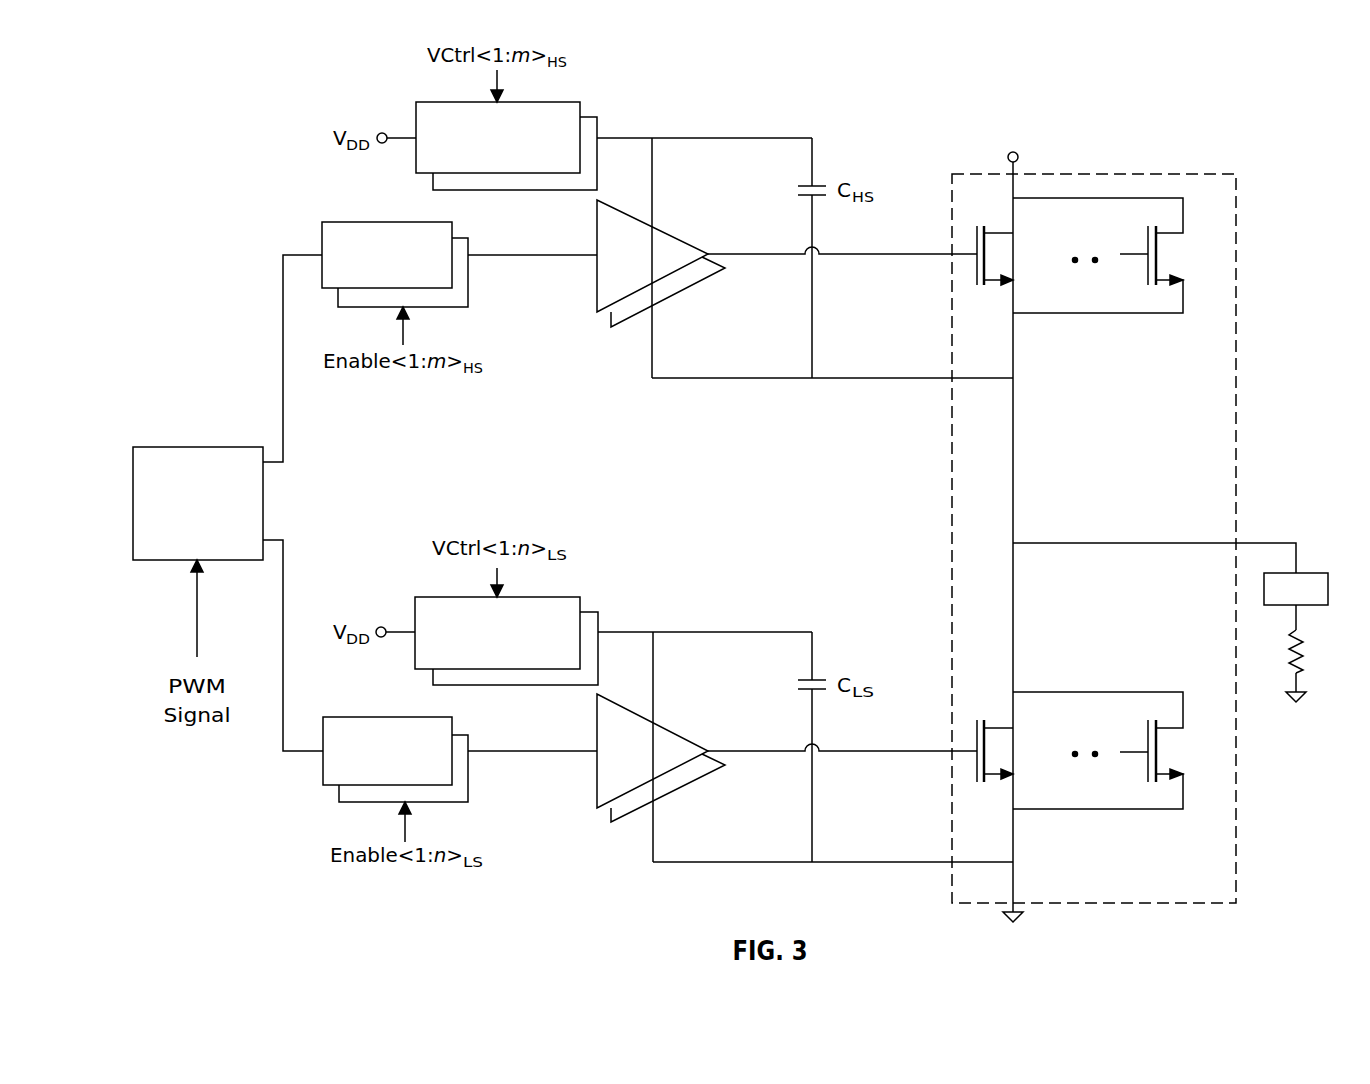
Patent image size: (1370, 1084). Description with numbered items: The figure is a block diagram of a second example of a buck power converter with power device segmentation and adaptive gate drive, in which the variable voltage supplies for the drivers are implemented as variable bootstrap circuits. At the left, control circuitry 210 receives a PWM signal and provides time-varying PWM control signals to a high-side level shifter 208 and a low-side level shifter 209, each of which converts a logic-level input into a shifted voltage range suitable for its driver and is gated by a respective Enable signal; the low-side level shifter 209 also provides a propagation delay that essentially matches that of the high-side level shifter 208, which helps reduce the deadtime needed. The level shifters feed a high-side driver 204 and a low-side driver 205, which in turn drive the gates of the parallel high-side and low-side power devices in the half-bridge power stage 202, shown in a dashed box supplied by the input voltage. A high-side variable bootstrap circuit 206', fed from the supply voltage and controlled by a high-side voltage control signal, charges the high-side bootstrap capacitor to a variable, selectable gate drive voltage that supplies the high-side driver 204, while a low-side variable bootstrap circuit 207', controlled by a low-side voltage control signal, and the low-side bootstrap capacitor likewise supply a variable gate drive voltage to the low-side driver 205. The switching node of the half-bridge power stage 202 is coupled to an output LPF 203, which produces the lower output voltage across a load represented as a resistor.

The half-bridge power stage 202 is at (1114, 174).
The output LPF 203 is at (1315, 572).
The high-side driver 204 is at (690, 287).
The low-side driver 205 is at (690, 783).
The high-side variable bootstrap circuit 206' is at (537, 125).
The low-side variable bootstrap circuit 207' is at (537, 619).
The high-side level shifter 208 is at (377, 218).
The low-side level shifter 209 is at (373, 717).
The control circuitry 210 is at (188, 445).